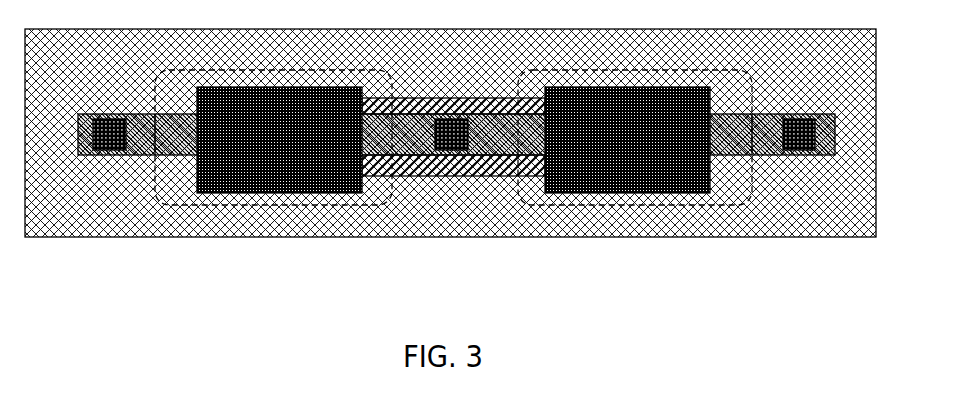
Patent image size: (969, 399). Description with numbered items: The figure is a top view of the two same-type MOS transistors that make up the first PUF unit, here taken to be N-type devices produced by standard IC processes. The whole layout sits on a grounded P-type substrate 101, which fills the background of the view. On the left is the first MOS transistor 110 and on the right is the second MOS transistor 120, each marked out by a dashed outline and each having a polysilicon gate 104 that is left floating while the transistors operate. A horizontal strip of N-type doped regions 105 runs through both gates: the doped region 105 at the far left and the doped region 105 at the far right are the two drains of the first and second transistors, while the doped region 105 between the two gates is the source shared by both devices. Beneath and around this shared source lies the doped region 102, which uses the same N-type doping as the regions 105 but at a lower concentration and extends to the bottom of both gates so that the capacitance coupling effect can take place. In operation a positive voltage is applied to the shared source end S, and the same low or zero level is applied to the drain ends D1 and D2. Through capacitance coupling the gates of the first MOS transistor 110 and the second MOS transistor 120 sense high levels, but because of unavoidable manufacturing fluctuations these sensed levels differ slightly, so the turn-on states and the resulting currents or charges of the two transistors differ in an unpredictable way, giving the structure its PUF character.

The P-type substrate 101 is at (453, 83).
The doped region below the shared source 102 is at (484, 164).
The polysilicon gate 104 is at (453, 140).
The N-type doped region 105 is at (133, 120).
The first MOS transistor 110 is at (376, 90).
The second MOS transistor 120 is at (728, 92).
The drain end of the first MOS transistor D1 is at (107, 153).
The shared source end S is at (453, 153).
The drain end of the second MOS transistor D2 is at (800, 153).